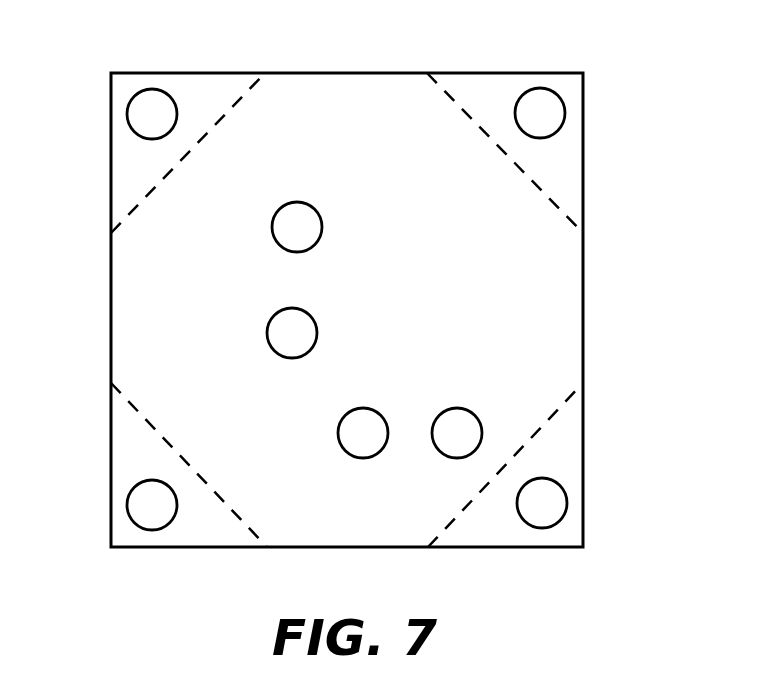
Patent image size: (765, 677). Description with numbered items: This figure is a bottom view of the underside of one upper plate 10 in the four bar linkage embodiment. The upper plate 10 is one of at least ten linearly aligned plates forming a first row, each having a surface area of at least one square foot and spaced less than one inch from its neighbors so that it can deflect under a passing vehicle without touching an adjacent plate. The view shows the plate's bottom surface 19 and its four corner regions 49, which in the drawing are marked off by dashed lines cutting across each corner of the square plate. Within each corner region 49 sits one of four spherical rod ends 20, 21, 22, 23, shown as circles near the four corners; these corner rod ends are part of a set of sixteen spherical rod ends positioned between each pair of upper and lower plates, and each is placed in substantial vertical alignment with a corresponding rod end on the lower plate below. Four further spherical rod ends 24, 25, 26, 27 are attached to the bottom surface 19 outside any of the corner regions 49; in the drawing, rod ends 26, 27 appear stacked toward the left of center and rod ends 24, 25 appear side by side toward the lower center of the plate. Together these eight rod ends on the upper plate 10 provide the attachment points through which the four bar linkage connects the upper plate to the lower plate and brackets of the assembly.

The plate 10 is at (111, 324).
The bottom surface 19 is at (472, 283).
The spherical rod end 20 is at (142, 505).
The spherical rod end 21 is at (142, 113).
The spherical rod end 22 is at (550, 114).
The spherical rod end 23 is at (550, 503).
The spherical rod end 24 is at (366, 450).
The spherical rod end 25 is at (459, 450).
The spherical rod end 26 is at (280, 334).
The spherical rod end 27 is at (285, 226).
The corner region 49 is at (126, 171).